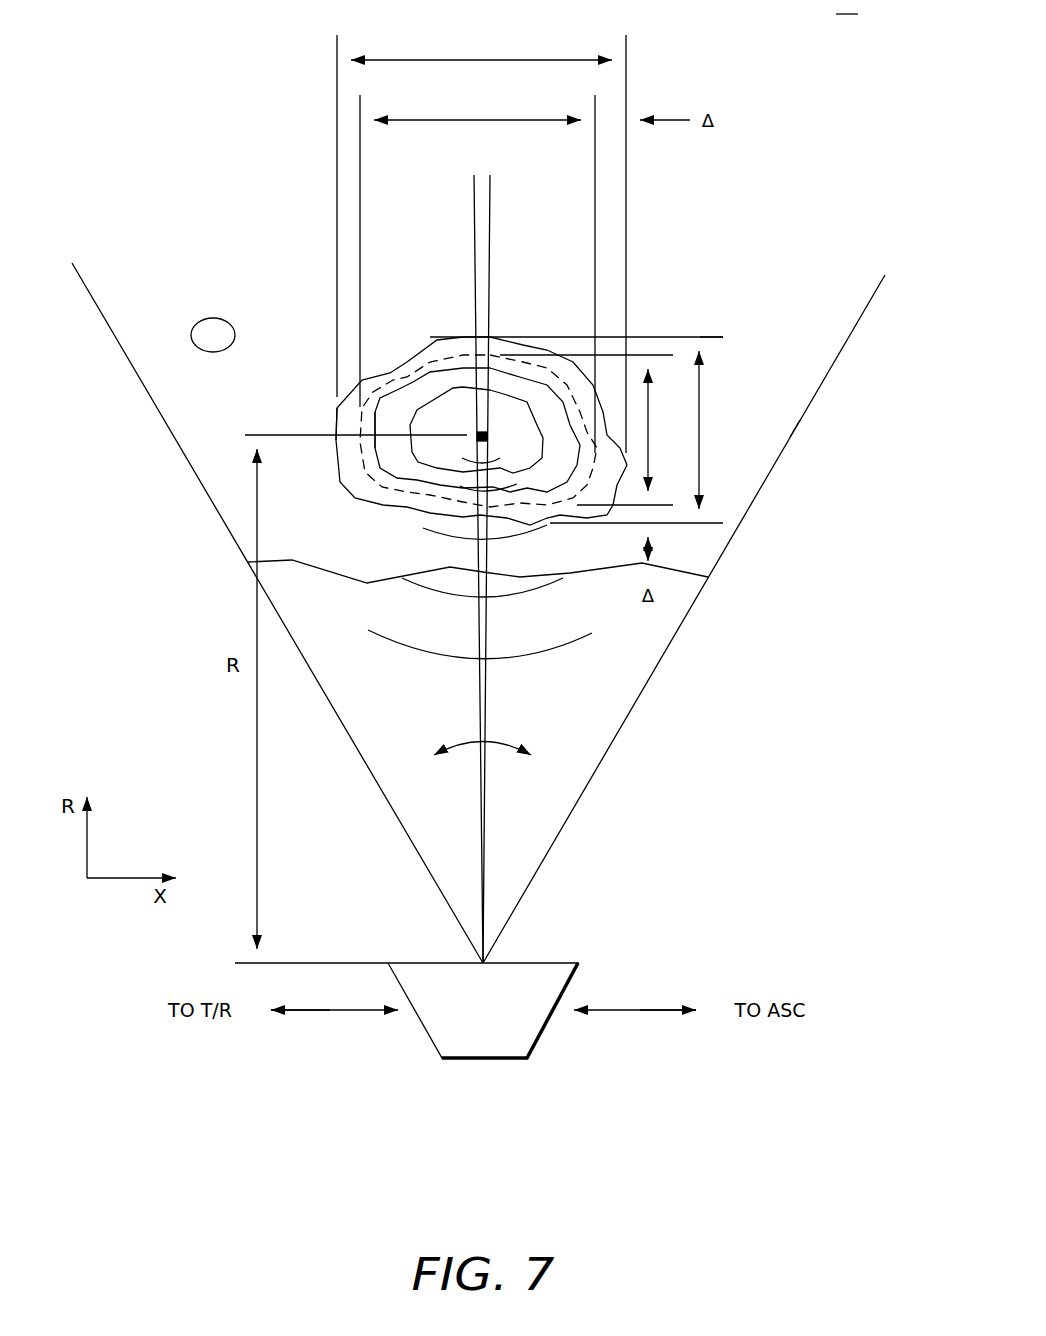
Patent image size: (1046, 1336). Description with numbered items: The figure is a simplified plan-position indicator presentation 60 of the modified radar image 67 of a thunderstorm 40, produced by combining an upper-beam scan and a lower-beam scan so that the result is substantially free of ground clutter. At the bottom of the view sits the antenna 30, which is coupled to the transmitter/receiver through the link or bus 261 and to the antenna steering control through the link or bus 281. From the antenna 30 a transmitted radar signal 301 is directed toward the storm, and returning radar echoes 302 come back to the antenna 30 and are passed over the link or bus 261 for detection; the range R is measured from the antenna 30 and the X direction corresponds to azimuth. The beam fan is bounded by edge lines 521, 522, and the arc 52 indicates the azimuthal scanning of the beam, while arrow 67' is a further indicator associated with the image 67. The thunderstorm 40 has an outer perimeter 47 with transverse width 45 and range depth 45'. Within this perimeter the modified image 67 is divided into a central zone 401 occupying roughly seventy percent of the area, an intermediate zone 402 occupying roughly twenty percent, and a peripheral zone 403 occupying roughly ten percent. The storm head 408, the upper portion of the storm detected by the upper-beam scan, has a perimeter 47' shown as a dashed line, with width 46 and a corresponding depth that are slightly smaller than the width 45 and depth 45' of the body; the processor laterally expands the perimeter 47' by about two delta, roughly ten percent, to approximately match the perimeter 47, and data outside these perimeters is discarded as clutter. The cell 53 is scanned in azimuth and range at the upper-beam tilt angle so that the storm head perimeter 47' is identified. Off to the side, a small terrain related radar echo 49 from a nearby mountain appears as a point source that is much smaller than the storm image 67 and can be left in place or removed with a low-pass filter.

The plan-position indicator presentation 60 is at (846, 7).
The transverse width 45 is at (481, 233).
The storm head width 46 is at (478, 117).
The range depth 45' is at (589, 430).
The outer perimeter 47 is at (504, 414).
The storm head perimeter 47' is at (392, 427).
The thunderstorm 40 is at (314, 354).
The central zone 401 is at (458, 397).
The intermediate zone 402 is at (418, 395).
The peripheral zone 403 is at (380, 380).
The storm head 408 is at (390, 490).
The cell 53 is at (480, 428).
The terrain related radar echo 49 is at (210, 320).
The modified radar image 67 is at (833, 425).
The beam edge offset 67' is at (747, 301).
The left beam boundary 521 is at (358, 758).
The right beam boundary 522 is at (597, 758).
The transmitted radar signal 301 is at (483, 830).
The returning radar echoes 302 is at (542, 655).
The scan direction 52 is at (478, 743).
The antenna 30 is at (420, 963).
The link or bus 261 is at (323, 1012).
The link or bus 281 is at (643, 1012).